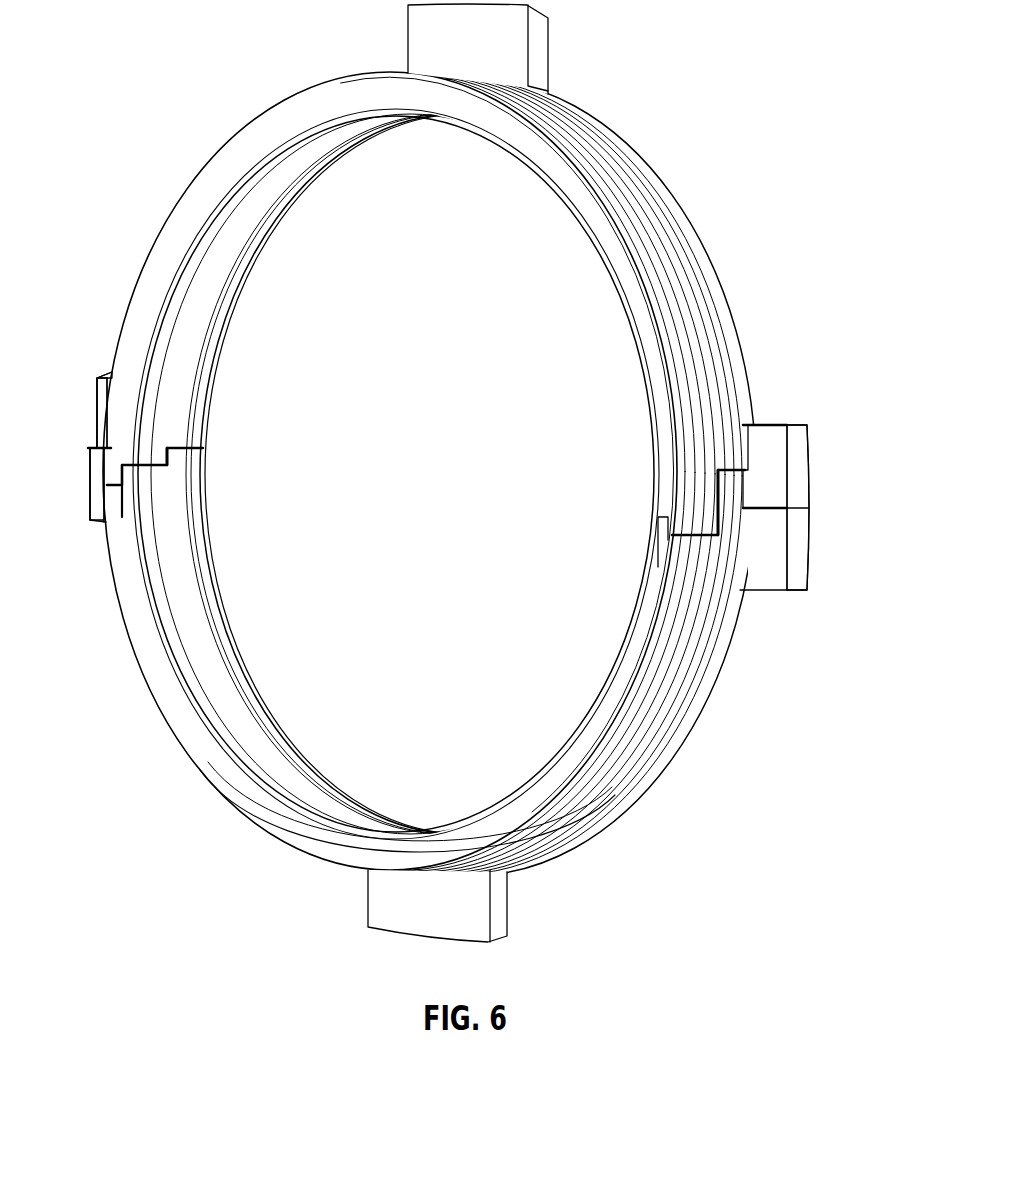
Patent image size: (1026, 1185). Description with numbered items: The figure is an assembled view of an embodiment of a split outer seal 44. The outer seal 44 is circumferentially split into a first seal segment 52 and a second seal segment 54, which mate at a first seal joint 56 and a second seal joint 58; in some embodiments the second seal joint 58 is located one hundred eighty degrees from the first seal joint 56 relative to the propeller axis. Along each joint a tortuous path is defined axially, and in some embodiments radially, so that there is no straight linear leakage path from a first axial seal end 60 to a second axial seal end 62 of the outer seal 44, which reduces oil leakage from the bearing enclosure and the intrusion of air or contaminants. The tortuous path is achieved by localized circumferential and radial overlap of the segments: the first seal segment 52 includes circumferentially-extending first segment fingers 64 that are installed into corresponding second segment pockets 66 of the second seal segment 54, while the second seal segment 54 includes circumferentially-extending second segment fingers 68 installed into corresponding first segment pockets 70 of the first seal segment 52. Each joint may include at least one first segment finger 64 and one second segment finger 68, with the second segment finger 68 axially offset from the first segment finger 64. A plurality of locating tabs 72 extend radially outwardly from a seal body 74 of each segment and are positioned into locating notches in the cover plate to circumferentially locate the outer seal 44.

The outer seal 44 is at (728, 37).
The first seal segment 52 is at (222, 178).
The second seal segment 54 is at (300, 830).
The first seal joint 56 is at (815, 503).
The second seal joint 58 is at (92, 448).
The first axial seal end 60 is at (258, 682).
The second axial seal end 62 is at (178, 758).
The first segment finger 64 is at (122, 418).
The second segment pocket 66 is at (125, 512).
The second segment finger 68 is at (183, 478).
The first segment pocket 70 is at (182, 430).
The locating tab 72 is at (420, 33).
The seal body 74 is at (628, 150).